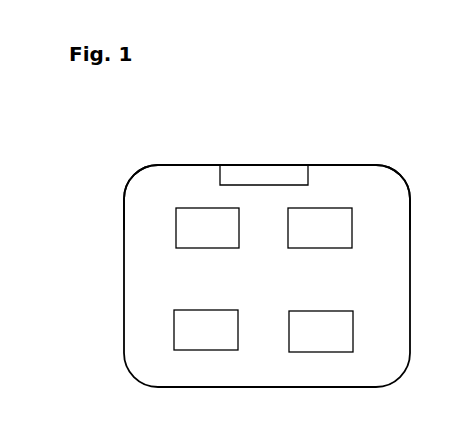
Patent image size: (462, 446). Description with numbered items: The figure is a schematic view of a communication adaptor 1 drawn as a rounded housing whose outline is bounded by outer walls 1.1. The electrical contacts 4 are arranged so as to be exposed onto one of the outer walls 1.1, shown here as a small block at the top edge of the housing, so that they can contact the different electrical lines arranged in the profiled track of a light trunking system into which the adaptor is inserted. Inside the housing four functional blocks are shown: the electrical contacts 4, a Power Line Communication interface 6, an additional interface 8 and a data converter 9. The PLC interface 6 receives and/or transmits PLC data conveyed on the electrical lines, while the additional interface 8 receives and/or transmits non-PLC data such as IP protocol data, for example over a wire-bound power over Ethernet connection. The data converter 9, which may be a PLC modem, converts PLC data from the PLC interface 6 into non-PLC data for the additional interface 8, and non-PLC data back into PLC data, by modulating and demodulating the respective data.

The communication adaptor 1 is at (267, 233).
The outer walls 1.1 is at (343, 165).
The electrical contacts 4 is at (276, 173).
The Power Line Communication interface 6 is at (320, 228).
The additional interface 8 is at (206, 330).
The data converter 9 is at (321, 331).